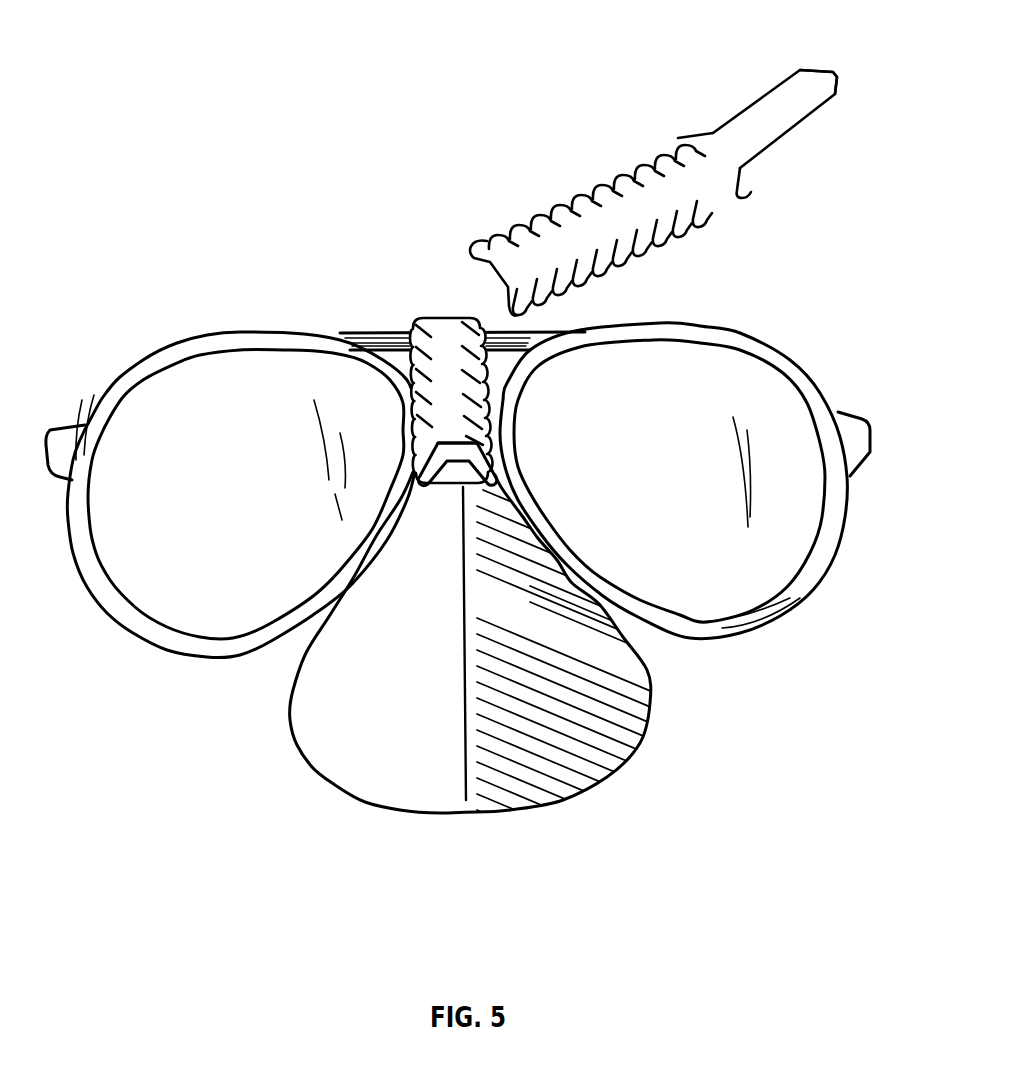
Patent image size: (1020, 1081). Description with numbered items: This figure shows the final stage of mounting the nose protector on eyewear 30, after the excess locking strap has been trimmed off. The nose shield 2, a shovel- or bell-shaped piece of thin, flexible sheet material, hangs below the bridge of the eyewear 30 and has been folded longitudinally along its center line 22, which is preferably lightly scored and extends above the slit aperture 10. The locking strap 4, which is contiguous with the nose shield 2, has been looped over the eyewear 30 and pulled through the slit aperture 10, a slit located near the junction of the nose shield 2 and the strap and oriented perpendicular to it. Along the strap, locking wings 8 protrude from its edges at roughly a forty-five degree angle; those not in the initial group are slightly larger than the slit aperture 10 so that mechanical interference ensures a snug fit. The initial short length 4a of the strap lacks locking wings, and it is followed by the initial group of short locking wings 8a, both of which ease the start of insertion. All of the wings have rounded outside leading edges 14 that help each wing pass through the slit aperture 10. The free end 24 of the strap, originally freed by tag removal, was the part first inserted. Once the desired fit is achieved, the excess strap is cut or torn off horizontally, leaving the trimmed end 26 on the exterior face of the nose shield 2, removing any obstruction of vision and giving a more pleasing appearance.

The nose shield 2 is at (370, 718).
The locking strap 4 is at (615, 222).
The initial short length 4a is at (784, 106).
The locking wings 8 is at (693, 215).
The initial group of short locking wings 8a is at (732, 188).
The slit aperture 10 is at (450, 463).
The rounded outside leading edges 14 is at (680, 134).
The center line 22 is at (462, 768).
The end of locking strap 24 is at (817, 70).
The trimmed end 26 is at (463, 443).
The eyewear 30 is at (725, 378).